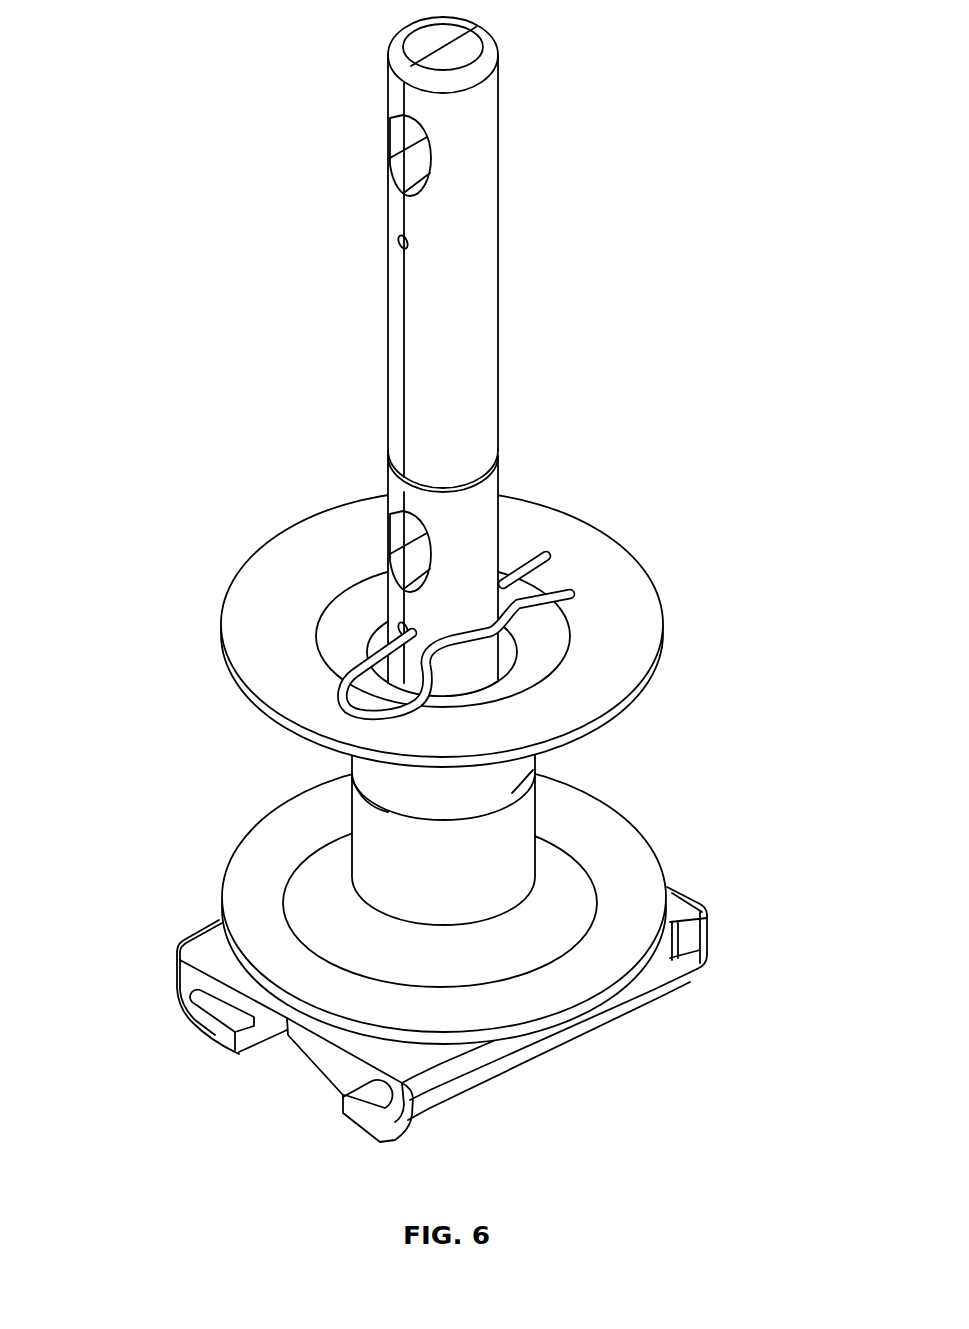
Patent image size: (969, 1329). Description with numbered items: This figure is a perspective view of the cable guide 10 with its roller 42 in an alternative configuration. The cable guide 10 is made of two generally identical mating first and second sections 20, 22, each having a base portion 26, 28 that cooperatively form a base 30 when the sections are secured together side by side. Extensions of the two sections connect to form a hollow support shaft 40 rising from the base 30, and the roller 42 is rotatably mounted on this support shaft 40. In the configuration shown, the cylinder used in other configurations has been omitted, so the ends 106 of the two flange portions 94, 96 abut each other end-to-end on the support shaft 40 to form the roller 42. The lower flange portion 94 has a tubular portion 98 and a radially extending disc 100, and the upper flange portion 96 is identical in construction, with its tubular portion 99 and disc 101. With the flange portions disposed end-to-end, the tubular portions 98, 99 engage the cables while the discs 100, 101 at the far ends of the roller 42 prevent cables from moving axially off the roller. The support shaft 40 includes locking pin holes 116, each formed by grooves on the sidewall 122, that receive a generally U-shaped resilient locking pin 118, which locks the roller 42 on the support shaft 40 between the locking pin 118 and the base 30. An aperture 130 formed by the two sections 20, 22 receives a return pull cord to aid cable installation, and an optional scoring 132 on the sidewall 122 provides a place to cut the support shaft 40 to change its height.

The cable guide 10 is at (158, 36).
The first section 20 is at (384, 357).
The second section 22 is at (487, 220).
The support shaft 40 is at (393, 217).
The locking pin hole 116 is at (398, 241).
The aperture 130 is at (433, 156).
The scoring 132 is at (498, 458).
The sidewall 122 is at (487, 368).
The roller 42 is at (487, 629).
The disc 101 is at (618, 674).
The flange portion 96 is at (681, 688).
The locking pin 118 is at (362, 713).
The flange portion 94 is at (468, 892).
The tubular portion 98 is at (510, 893).
The tubular portion 99 is at (352, 771).
The end of tubular portion 106 is at (513, 793).
The disc 100 is at (650, 953).
The base portion 26 is at (441, 1008).
The base portion 28 is at (433, 1092).
The base 30 is at (322, 1051).